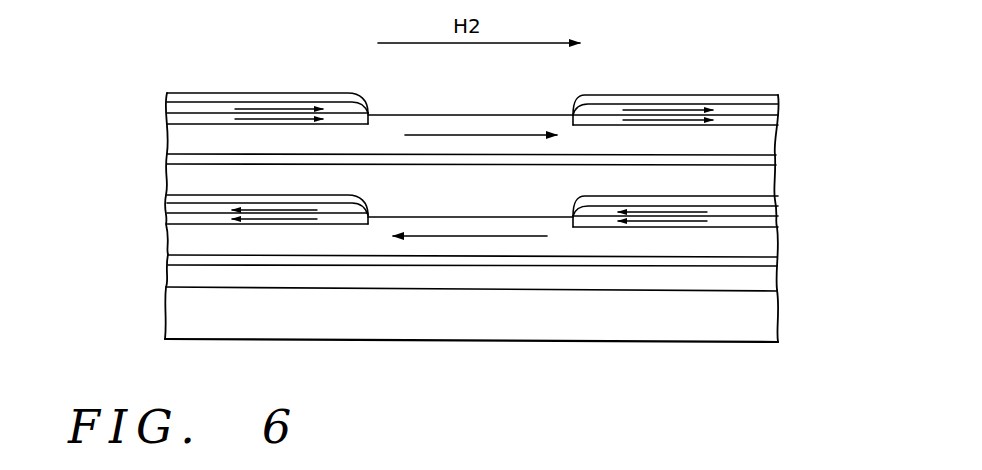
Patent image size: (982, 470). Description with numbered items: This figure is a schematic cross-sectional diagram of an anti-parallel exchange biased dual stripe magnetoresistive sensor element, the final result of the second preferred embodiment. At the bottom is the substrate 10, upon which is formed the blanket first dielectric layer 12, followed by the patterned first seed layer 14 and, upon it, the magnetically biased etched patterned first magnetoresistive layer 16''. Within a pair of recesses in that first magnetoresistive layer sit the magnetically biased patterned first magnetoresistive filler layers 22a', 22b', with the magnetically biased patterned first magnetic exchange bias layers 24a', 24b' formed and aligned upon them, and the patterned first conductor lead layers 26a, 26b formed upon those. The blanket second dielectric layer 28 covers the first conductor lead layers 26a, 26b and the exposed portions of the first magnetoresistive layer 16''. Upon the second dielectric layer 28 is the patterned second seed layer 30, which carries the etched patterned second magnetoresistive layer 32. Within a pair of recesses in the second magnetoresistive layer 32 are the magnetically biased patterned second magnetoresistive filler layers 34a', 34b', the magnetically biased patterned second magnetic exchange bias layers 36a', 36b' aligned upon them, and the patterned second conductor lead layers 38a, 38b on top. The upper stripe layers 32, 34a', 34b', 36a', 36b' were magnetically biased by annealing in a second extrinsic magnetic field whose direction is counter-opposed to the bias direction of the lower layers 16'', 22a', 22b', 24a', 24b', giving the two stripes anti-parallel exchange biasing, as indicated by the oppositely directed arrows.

The substrate 10 is at (183, 315).
The blanket first dielectric layer 12 is at (183, 277).
The patterned first seed layer 14 is at (183, 258).
The magnetically biased etched patterned first magnetoresistive (MR) layer 16'' is at (427, 227).
The magnetically biased patterned first magnetoresistive (MR) filler layer 22a' is at (222, 197).
The magnetically biased patterned first magnetic exchange bias layer 24a' is at (222, 180).
The patterned first conductor lead layer 26a is at (197, 198).
The magnetically biased patterned first magnetoresistive (MR) filler layer 22b' is at (719, 206).
The magnetically biased patterned first magnetic exchange bias layer 24b' is at (719, 188).
The patterned first conductor lead layer 26b is at (743, 202).
The blanket second dielectric layer 28 is at (225, 173).
The patterned second seed layer 30 is at (226, 155).
The etched patterned second magnetoresistive (MR) layer 32 is at (230, 140).
The magnetically biased patterned second magnetoresistive (MR) filler layer 34a' is at (245, 74).
The magnetically biased patterned second magnetic exchange bias layer 36a' is at (267, 69).
The patterned second conductor lead layer 38a is at (323, 98).
The magnetically biased patterned second magnetoresistive (MR) filler layer 34b' is at (700, 75).
The magnetically biased patterned second magnetic exchange bias layer 36b' is at (675, 70).
The patterned second conductor lead layer 38b is at (622, 100).